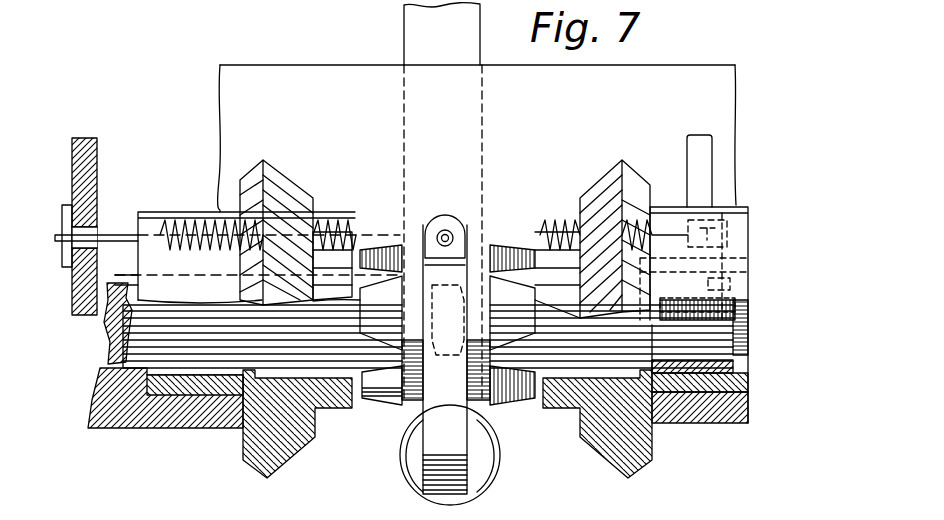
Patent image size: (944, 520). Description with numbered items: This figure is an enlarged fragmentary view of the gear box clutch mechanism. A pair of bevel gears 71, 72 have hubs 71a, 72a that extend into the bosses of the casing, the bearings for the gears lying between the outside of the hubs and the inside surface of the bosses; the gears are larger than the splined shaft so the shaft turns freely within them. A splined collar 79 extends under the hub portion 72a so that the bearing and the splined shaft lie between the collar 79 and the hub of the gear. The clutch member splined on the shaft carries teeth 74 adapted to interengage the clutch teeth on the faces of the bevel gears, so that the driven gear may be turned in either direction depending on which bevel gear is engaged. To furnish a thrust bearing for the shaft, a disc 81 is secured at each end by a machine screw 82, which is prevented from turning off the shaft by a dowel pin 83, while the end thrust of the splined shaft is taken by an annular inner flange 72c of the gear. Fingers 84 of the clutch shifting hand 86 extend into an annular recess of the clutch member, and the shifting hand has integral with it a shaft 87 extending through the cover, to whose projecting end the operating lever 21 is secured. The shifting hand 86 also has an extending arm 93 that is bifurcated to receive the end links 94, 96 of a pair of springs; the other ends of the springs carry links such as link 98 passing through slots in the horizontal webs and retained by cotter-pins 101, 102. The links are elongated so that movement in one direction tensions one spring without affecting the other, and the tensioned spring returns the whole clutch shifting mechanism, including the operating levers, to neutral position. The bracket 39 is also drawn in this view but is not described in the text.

The operating lever 21 is at (404, 32).
The bracket 39 is at (126, 282).
The bevel gear 71 is at (293, 452).
The hub 71a is at (210, 396).
The bevel gear 72 is at (602, 438).
The hub 72a is at (708, 395).
The annular inner flange 72c is at (652, 332).
The clutch teeth 74 is at (380, 388).
The splined collar 79 is at (680, 378).
The disc 81 is at (745, 270).
The machine screw 82 is at (748, 318).
The dowel pin 83 is at (740, 300).
The fingers 84 is at (460, 315).
The clutch shifting hand 86 is at (432, 456).
The shaft 87 is at (488, 458).
The arm 93 is at (452, 218).
The end link 94 is at (322, 232).
The end link 96 is at (583, 238).
The link 98 is at (57, 241).
The cotter-pin 101 is at (67, 205).
The cotter-pin 102 is at (740, 207).